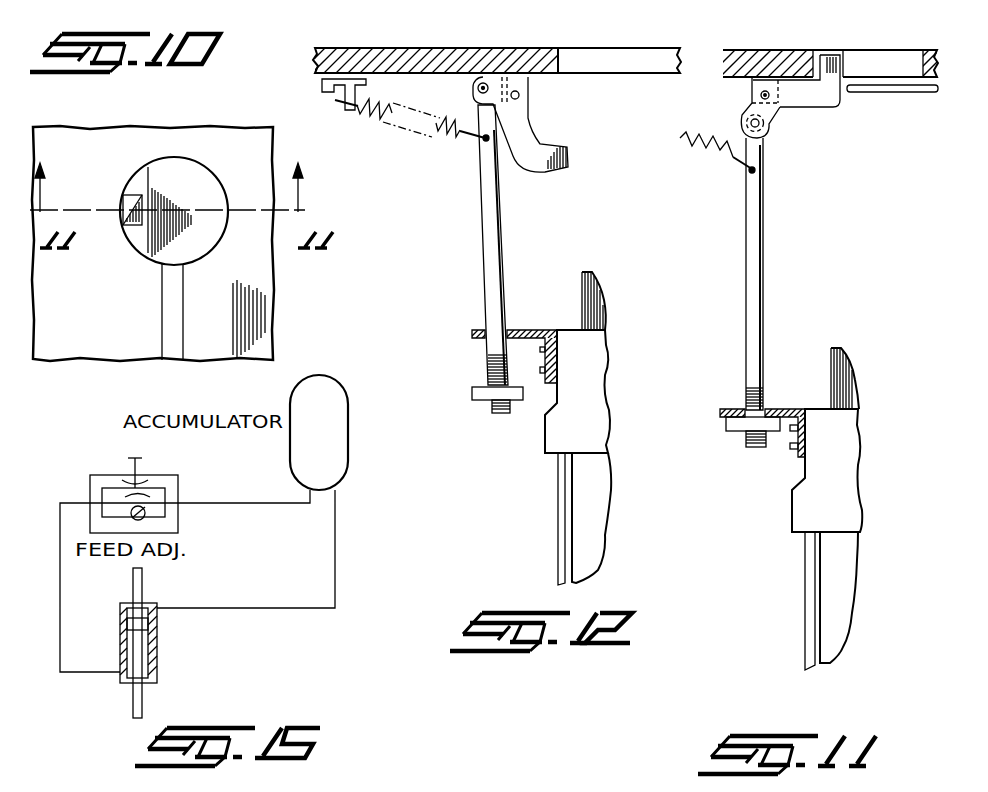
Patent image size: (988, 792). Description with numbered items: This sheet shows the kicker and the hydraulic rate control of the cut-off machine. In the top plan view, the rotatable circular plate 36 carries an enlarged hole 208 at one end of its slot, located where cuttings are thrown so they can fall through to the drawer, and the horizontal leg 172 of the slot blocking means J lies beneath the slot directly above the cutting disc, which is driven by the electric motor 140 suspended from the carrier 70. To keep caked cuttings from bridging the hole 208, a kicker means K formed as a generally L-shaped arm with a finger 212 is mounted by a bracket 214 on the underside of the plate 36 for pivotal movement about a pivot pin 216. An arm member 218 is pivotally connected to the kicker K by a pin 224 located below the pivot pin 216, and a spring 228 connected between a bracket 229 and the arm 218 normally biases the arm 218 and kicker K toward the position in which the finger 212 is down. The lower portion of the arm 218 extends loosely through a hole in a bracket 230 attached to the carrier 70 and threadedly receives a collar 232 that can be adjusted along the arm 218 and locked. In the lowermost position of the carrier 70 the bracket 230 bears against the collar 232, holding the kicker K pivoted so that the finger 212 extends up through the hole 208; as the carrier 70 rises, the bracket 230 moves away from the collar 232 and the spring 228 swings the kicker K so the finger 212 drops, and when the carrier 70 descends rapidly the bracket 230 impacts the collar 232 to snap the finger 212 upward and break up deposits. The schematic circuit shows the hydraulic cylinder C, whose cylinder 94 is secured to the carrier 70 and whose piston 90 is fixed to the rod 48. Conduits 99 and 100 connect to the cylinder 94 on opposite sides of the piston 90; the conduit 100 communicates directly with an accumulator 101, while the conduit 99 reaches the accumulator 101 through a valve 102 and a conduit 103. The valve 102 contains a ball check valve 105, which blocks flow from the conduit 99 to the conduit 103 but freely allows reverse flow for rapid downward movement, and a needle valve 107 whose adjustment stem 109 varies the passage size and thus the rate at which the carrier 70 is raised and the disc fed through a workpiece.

In FIG. 10, the circular plate 36 is at (265, 312).
In FIG. 12, the circular plate 36 is at (413, 48).
In FIG. 11, the circular plate 36 is at (756, 50).
In FIG. 10, the enlarged hole 208 is at (202, 173).
In FIG. 12, the enlarged hole 208 is at (562, 62).
In FIG. 11, the enlarged hole 208 is at (817, 50).
In FIG. 10, the horizontal leg 172 is at (178, 167).
In FIG. 11, the horizontal leg 172 is at (880, 92).
In FIG. 10, the finger 212 is at (123, 208).
In FIG. 12, the finger 212 is at (569, 156).
In FIG. 11, the finger 212 is at (845, 65).
In FIG. 10, the electric motor 140 is at (167, 305).
In FIG. 12, the bracket 229 is at (322, 84).
In FIG. 12, the spring 228 is at (375, 120).
In FIG. 11, the spring 228 is at (700, 150).
In FIG. 12, the pin 224 is at (472, 96).
In FIG. 11, the pin 224 is at (765, 133).
In FIG. 12, the bracket 214 is at (530, 80).
In FIG. 11, the bracket 214 is at (745, 80).
In FIG. 12, the pivot pin 216 is at (532, 100).
In FIG. 11, the pivot pin 216 is at (771, 112).
In FIG. 12, the arm member 218 is at (482, 265).
In FIG. 11, the arm member 218 is at (764, 268).
In FIG. 12, the bracket 230 is at (535, 330).
In FIG. 11, the bracket 230 is at (730, 409).
In FIG. 12, the collar 232 is at (479, 400).
In FIG. 11, the collar 232 is at (735, 425).
In FIG. 12, the carrier 70 is at (606, 357).
In FIG. 11, the carrier 70 is at (862, 430).
In FIG. 15, the accumulator 101 is at (348, 443).
In FIG. 15, the conduit 100 is at (335, 587).
In FIG. 15, the conduit 99 is at (60, 550).
In FIG. 15, the conduit 103 is at (248, 503).
In FIG. 15, the valve 102 is at (98, 472).
In FIG. 15, the needle valve 107 is at (150, 475).
In FIG. 15, the adjustment stem 109 is at (125, 466).
In FIG. 15, the ball check valve 105 is at (145, 515).
In FIG. 15, the rod 48 is at (145, 585).
In FIG. 15, the cylinder 94 is at (157, 652).
In FIG. 15, the piston 90 is at (127, 628).
In FIG. 10, the kicker means K is at (137, 188).
In FIG. 12, the kicker means K is at (553, 167).
In FIG. 11, the kicker means K is at (837, 108).
In FIG. 10, the slot blocking means J is at (220, 198).
In FIG. 11, the slot blocking means J is at (925, 108).
In FIG. 15, the hydraulic cylinder C is at (160, 672).